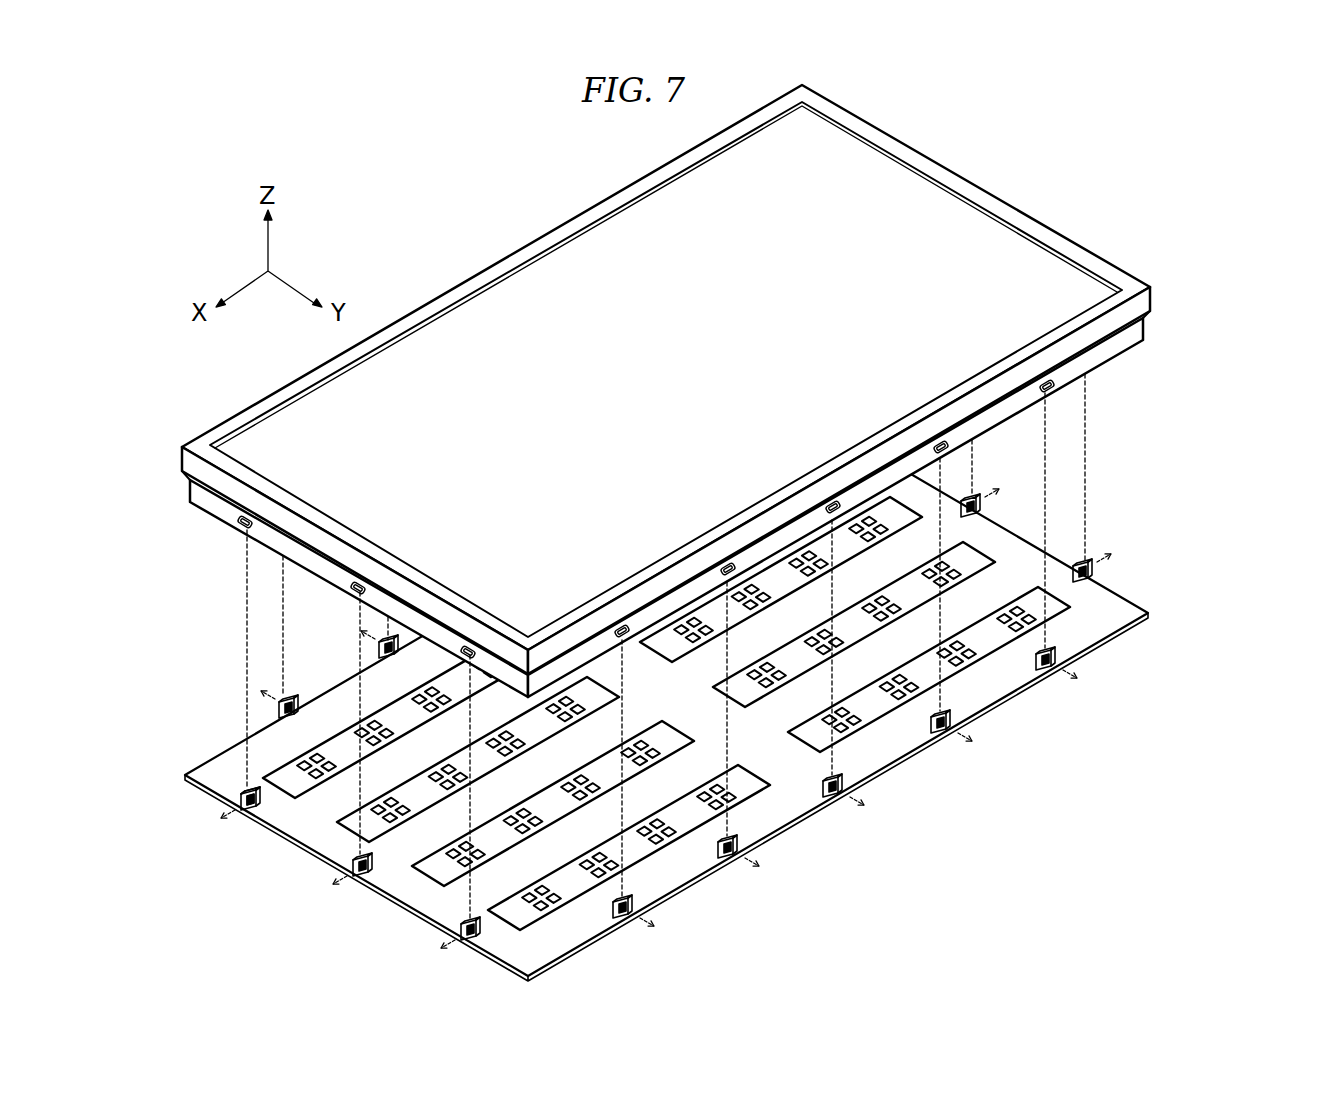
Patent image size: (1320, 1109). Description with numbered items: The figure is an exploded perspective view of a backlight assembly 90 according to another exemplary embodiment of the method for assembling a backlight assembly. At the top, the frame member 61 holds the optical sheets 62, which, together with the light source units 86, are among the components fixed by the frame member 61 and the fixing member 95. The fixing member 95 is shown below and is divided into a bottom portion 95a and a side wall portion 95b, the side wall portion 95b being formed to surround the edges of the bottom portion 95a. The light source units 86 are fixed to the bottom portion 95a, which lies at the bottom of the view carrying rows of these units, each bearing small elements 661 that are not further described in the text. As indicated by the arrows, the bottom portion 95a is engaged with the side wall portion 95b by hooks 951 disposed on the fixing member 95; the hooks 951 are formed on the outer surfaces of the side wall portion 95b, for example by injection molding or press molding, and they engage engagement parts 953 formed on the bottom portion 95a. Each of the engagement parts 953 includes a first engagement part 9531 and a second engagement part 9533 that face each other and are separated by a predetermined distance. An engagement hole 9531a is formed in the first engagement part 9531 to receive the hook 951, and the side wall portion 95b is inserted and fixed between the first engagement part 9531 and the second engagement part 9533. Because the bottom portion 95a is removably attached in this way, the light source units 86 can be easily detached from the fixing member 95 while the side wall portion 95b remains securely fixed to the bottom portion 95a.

The backlight assembly 90 is at (495, 164).
The frame member 61 is at (666, 379).
The optical sheets 62 is at (887, 181).
The fixing member 95 is at (1265, 477).
The bottom portion 95a is at (1140, 597).
The side wall portion 95b is at (715, 504).
The hooks 951 is at (238, 528).
The engagement parts 953 is at (611, 662).
The first engagement part 9531 is at (238, 787).
The engagement hole 9531a is at (245, 812).
The second engagement part 9533 is at (247, 793).
The light source units 86 is at (666, 735).
The light emitting diode 661 is at (463, 855).